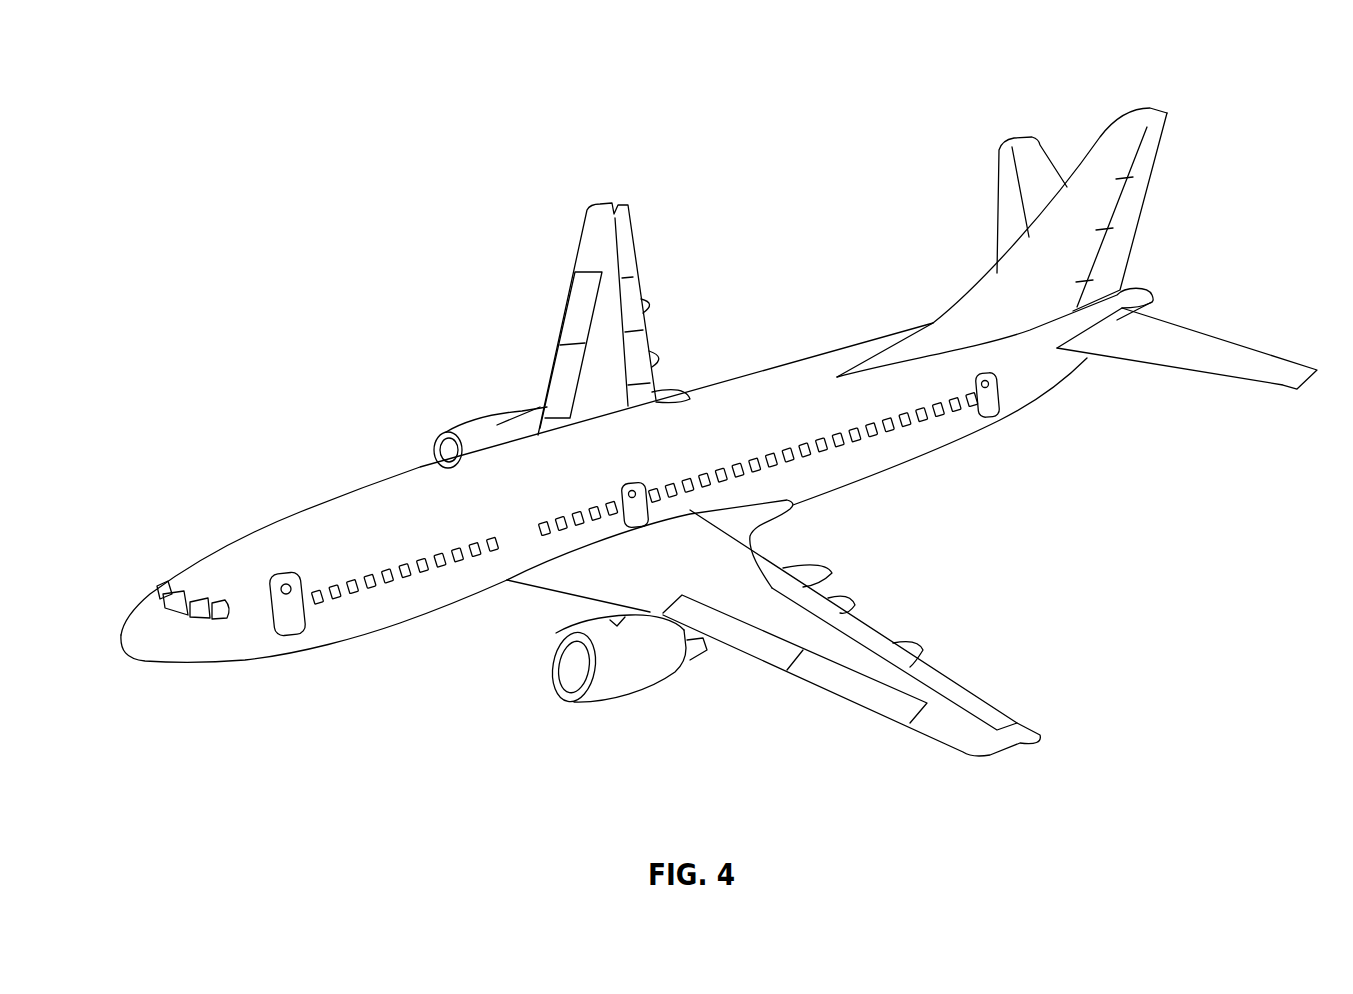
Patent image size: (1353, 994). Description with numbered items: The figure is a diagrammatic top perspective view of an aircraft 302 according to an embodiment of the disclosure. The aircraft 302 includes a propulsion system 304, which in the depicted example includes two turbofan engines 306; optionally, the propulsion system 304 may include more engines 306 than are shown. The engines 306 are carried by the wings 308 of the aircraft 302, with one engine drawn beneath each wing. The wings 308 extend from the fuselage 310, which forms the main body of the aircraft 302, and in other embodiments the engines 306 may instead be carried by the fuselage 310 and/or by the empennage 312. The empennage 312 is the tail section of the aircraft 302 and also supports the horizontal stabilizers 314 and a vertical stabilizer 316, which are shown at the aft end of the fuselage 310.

The aircraft 302 is at (396, 180).
The propulsion system 304 is at (530, 751).
The turbofan engines 306 is at (473, 422).
The wings 308 is at (607, 212).
The fuselage 310 is at (367, 612).
The empennage 312 is at (881, 318).
The horizontal stabilizers 314 is at (1030, 143).
The vertical stabilizer 316 is at (1128, 122).